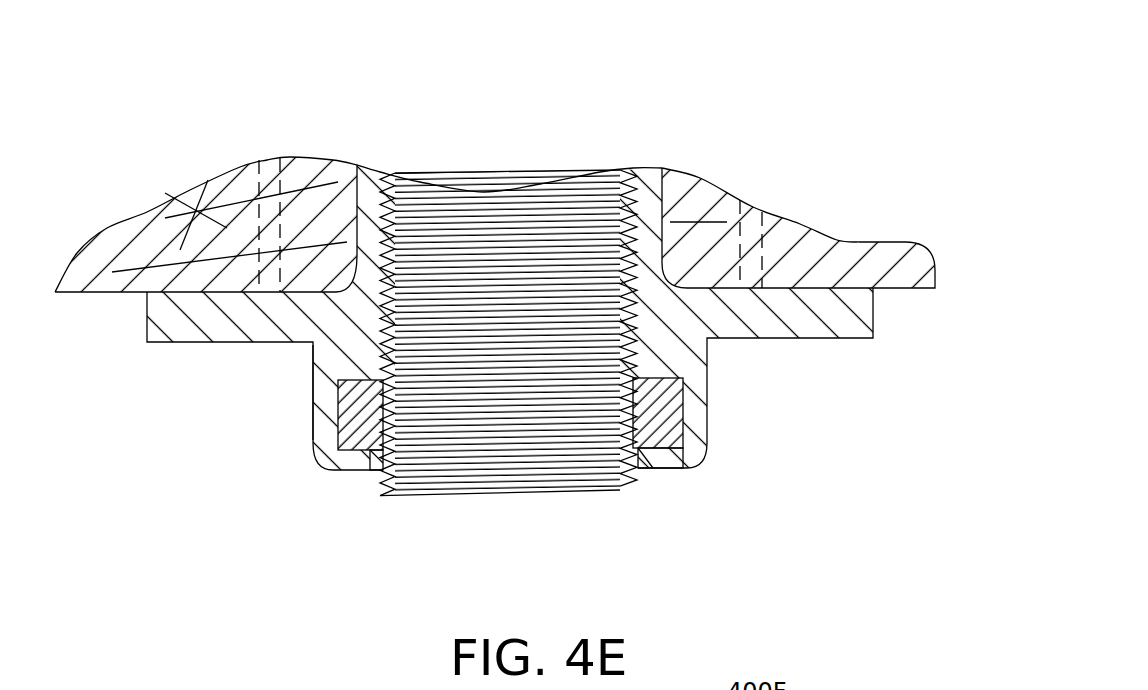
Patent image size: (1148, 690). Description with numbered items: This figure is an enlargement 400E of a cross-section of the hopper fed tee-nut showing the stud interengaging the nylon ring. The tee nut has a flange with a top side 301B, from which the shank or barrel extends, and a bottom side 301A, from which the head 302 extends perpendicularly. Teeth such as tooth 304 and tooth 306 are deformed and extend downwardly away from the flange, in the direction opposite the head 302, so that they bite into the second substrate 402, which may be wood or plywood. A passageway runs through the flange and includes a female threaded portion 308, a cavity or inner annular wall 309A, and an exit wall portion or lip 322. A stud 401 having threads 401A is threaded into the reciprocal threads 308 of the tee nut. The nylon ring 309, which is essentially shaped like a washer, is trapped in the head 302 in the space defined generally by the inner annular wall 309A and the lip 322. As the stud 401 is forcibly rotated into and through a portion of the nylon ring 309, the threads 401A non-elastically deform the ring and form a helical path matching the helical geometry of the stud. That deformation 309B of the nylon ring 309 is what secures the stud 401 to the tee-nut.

The enlargement 400E is at (638, 57).
The second substrate 402 is at (313, 163).
The tooth 306 is at (160, 180).
The bottom side of flange 301A is at (210, 343).
The head 302 is at (312, 415).
The top side of flange 301B is at (723, 275).
The tooth 304 is at (800, 218).
The stud 401 is at (552, 495).
The female threaded portion 308 is at (393, 233).
The threads of stud 401A is at (427, 450).
The deformation of nylon ring 309B is at (337, 472).
The cavity or inner annular wall 309A is at (672, 392).
The nylon ring 309 is at (670, 430).
The lip or exit wall portion 322 is at (610, 473).